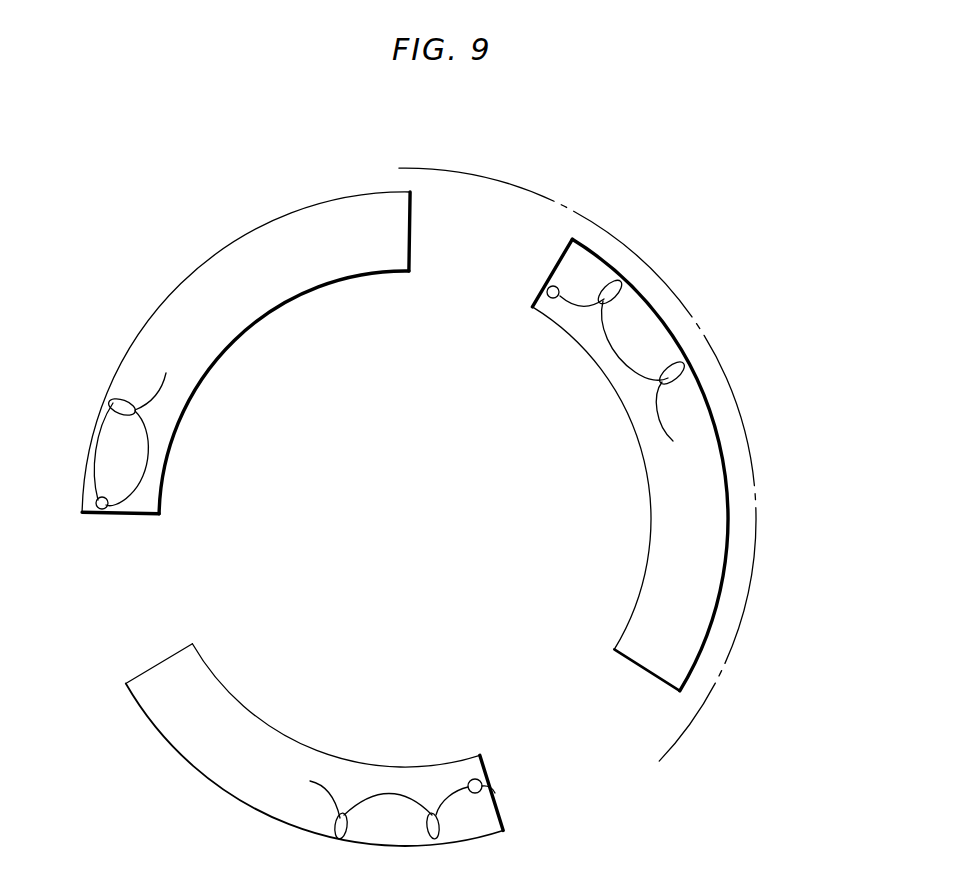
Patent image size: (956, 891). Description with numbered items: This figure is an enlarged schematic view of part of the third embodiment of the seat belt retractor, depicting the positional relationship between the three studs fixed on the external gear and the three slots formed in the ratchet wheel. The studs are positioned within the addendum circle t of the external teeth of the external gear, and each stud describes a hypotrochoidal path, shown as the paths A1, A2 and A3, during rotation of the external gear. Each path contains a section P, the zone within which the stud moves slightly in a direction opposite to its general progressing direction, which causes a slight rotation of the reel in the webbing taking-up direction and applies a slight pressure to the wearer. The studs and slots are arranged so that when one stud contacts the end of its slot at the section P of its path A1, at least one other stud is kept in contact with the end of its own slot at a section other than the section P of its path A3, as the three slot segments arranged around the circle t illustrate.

The section of the path P is at (112, 404).
The path described by the stud A1 is at (150, 393).
The path described by the stud A2 is at (320, 789).
The path described by the stud A3 is at (670, 408).
The addendum circle t is at (707, 697).